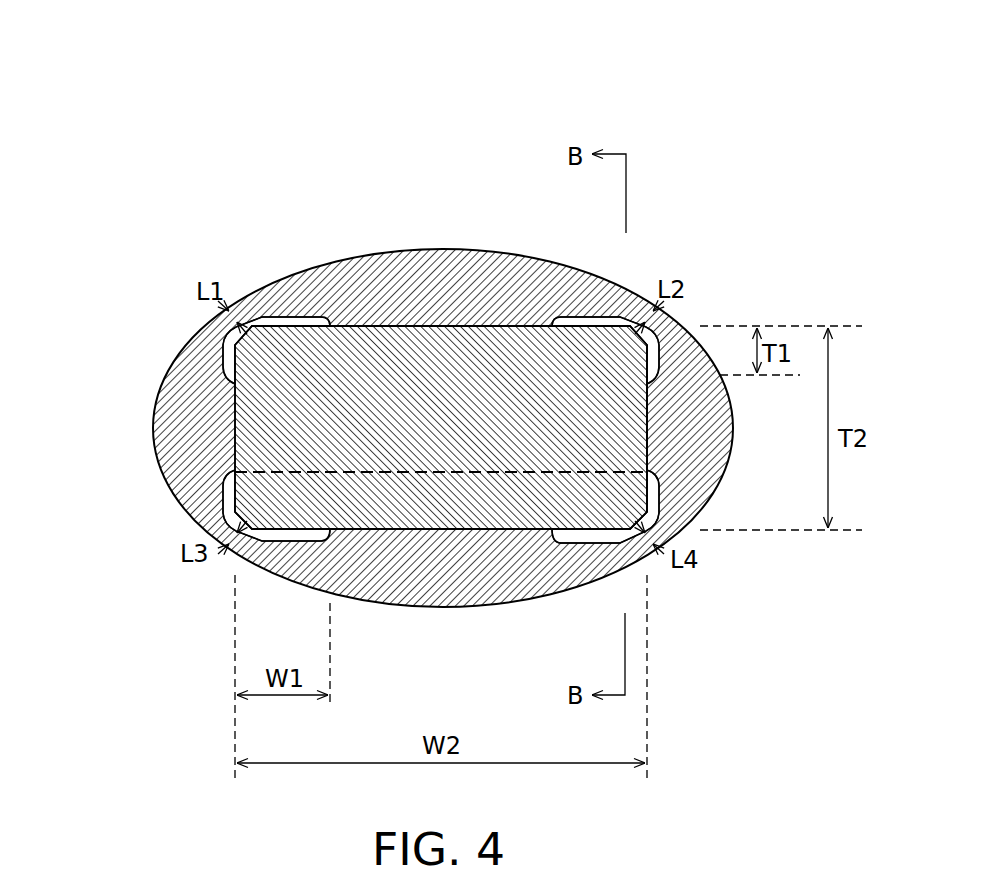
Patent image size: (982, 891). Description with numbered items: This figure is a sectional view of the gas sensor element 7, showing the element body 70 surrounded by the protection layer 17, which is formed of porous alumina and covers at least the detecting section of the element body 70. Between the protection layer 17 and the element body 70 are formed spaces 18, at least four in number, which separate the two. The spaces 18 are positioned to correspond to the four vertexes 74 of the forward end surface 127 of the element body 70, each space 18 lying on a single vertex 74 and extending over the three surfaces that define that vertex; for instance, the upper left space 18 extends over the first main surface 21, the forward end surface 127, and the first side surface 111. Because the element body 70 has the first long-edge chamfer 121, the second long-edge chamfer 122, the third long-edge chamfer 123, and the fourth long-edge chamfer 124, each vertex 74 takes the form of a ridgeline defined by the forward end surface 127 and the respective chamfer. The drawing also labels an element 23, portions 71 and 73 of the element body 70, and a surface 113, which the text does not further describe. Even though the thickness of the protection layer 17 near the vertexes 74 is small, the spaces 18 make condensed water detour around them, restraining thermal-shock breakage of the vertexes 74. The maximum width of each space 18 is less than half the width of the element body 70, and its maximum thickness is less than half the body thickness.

The gas sensor element 7 is at (437, 118).
The protection layer 17 is at (158, 418).
The space 18 is at (265, 318).
The first main surface 21 is at (500, 342).
The second portion 23 is at (497, 532).
The element body 70 is at (443, 422).
The first sheath portion 71 is at (410, 358).
The second sheath portion 73 is at (383, 497).
The vertex 74 is at (395, 422).
The first side surface 111 is at (235, 386).
The second surface of conductor 113 is at (648, 432).
The first long-edge chamfer 121 is at (228, 333).
The second long-edge chamfer 122 is at (637, 330).
The third long-edge chamfer 123 is at (228, 531).
The fourth long-edge chamfer 124 is at (633, 529).
The forward end surface 127 is at (350, 345).